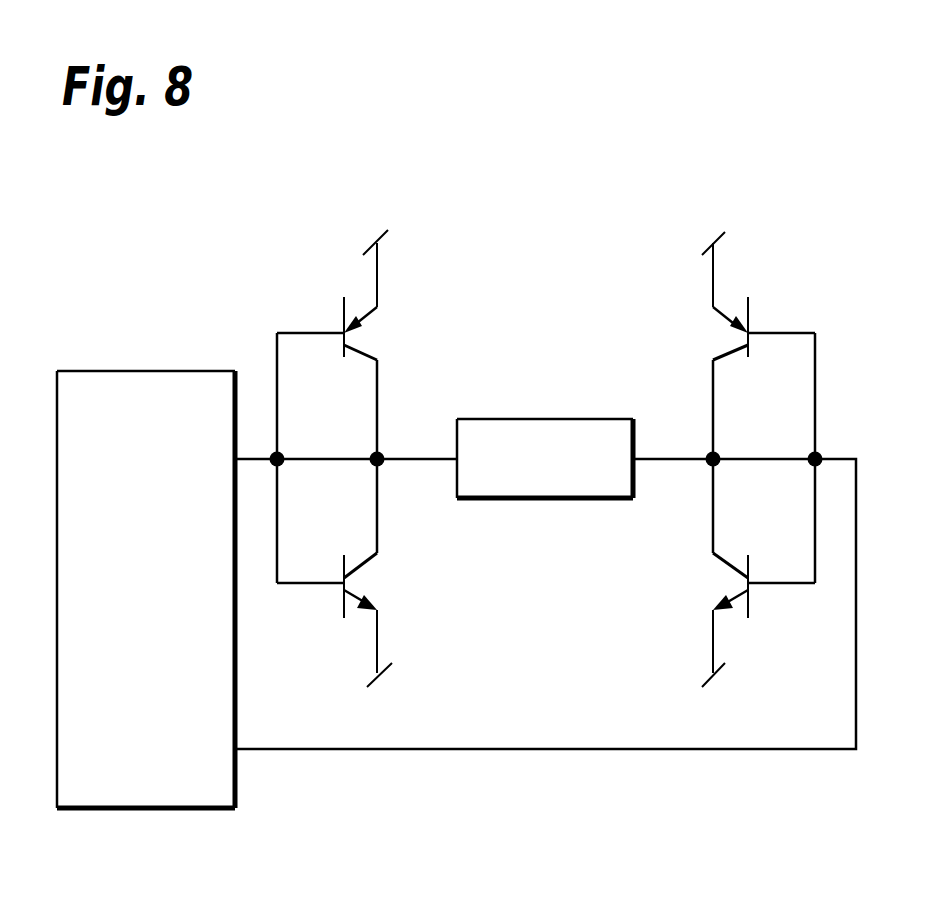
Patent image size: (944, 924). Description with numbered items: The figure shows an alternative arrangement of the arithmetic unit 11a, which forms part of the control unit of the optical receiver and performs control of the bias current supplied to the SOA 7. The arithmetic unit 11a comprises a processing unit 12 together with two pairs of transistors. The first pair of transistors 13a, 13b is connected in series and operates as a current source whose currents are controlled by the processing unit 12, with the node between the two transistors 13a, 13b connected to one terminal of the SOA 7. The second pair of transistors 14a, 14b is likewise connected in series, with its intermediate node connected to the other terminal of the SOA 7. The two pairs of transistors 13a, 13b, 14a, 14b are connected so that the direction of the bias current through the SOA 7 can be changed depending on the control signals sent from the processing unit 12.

The arithmetic unit 11a is at (478, 167).
The processing unit 12 is at (150, 371).
The transistor 13a is at (342, 315).
The transistor 13b is at (344, 602).
The transistor 14a is at (750, 315).
The transistor 14b is at (750, 602).
The SOA 7 is at (545, 419).